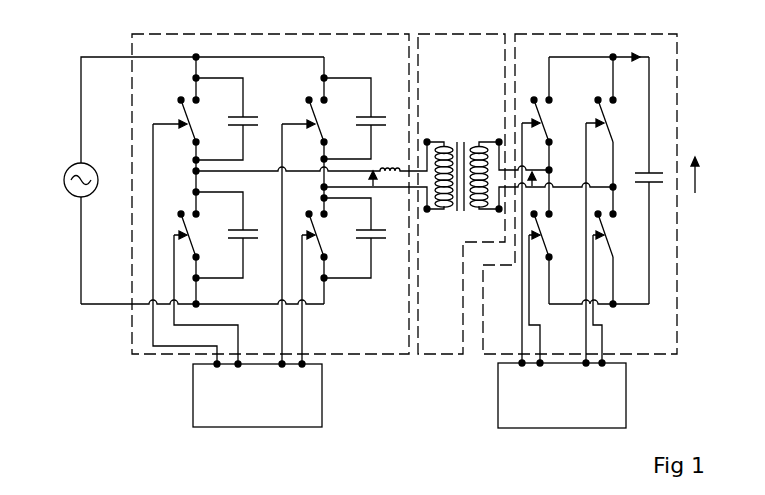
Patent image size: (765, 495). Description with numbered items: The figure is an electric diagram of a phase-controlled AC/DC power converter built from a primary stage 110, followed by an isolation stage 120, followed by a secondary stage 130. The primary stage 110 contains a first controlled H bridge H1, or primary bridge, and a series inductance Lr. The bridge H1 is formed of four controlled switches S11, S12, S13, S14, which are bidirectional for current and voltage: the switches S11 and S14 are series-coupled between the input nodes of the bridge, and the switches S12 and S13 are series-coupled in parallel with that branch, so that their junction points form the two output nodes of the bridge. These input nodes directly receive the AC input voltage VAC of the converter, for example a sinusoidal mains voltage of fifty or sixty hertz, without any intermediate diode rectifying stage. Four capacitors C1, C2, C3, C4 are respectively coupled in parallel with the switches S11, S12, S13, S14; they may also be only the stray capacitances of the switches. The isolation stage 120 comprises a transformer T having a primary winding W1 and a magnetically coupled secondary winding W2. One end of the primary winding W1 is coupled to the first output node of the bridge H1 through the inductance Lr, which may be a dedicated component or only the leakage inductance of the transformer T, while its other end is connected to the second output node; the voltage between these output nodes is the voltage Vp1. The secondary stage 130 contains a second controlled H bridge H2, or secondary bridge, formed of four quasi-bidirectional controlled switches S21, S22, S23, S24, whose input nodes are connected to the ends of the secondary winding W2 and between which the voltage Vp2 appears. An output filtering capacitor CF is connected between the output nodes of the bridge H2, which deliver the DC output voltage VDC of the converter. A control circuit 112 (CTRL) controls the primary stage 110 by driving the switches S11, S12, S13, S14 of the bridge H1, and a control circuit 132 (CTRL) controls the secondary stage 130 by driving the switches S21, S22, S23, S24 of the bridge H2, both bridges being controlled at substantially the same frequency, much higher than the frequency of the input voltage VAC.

The primary stage 110 is at (283, 34).
The control circuit 112 is at (323, 397).
The isolation stage 120 is at (438, 34).
The secondary stage 130 is at (543, 34).
The control circuit 132 is at (627, 397).
The first controlled H bridge H1 is at (338, 49).
The second controlled H bridge H2 is at (595, 46).
The transformer T is at (474, 50).
The primary winding W1 is at (444, 142).
The secondary winding W2 is at (479, 142).
The controlled switch S11 is at (179, 100).
The controlled switch S12 is at (307, 100).
The controlled switch S13 is at (309, 214).
The controlled switch S14 is at (181, 214).
The controlled switch S21 is at (534, 100).
The controlled switch S22 is at (597, 100).
The controlled switch S23 is at (607, 226).
The controlled switch S24 is at (544, 226).
The capacitor C1 is at (240, 112).
The capacitor C2 is at (369, 114).
The capacitor C3 is at (369, 229).
The capacitor C4 is at (240, 228).
The output filtering capacitor CF is at (654, 172).
The series inductance Lr is at (392, 166).
The AC input voltage VAC is at (82, 163).
The DC output voltage VDC is at (695, 195).
The voltage between output nodes of primary bridge Vp1 is at (374, 188).
The voltage between input nodes of secondary bridge Vp2 is at (533, 174).